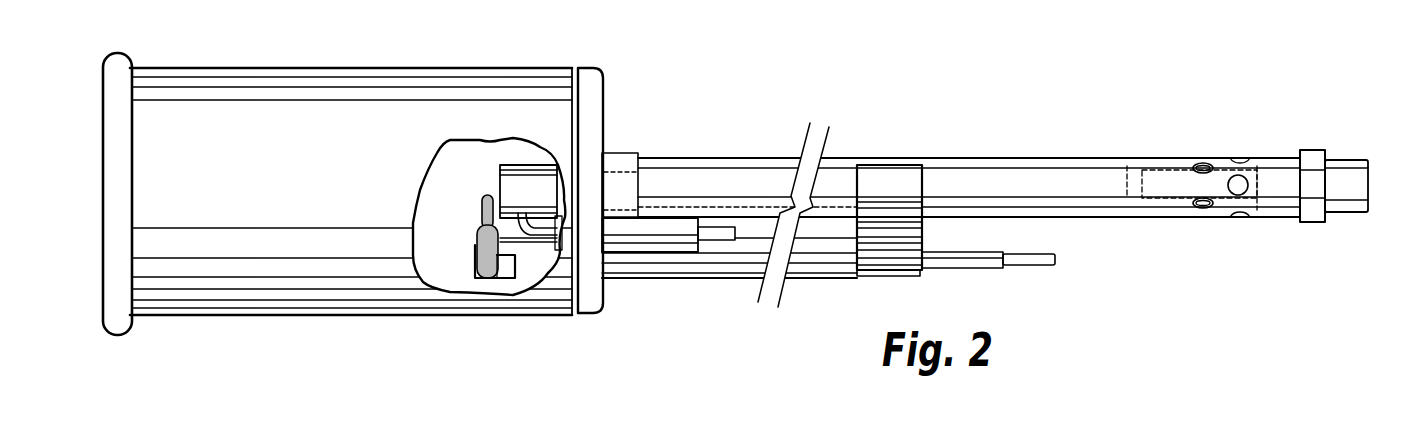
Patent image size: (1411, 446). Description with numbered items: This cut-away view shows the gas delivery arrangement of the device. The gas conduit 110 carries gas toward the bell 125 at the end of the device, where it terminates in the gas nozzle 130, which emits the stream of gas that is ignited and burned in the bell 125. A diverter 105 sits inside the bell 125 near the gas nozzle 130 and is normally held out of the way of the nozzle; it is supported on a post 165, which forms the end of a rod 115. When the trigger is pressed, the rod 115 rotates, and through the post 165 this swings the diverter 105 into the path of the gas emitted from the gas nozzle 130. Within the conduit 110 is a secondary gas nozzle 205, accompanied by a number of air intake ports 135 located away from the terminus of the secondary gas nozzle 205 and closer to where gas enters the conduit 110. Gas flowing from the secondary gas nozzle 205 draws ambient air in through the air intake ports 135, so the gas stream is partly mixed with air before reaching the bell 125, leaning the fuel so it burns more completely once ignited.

The diverter 105 is at (482, 206).
The gas conduit 110 is at (693, 157).
The rod 115 is at (998, 267).
The bell 125 is at (263, 317).
The gas nozzle 130 is at (525, 178).
The air intake ports 135 is at (1207, 162).
The post 165 is at (525, 258).
The secondary gas nozzle 205 is at (1150, 203).